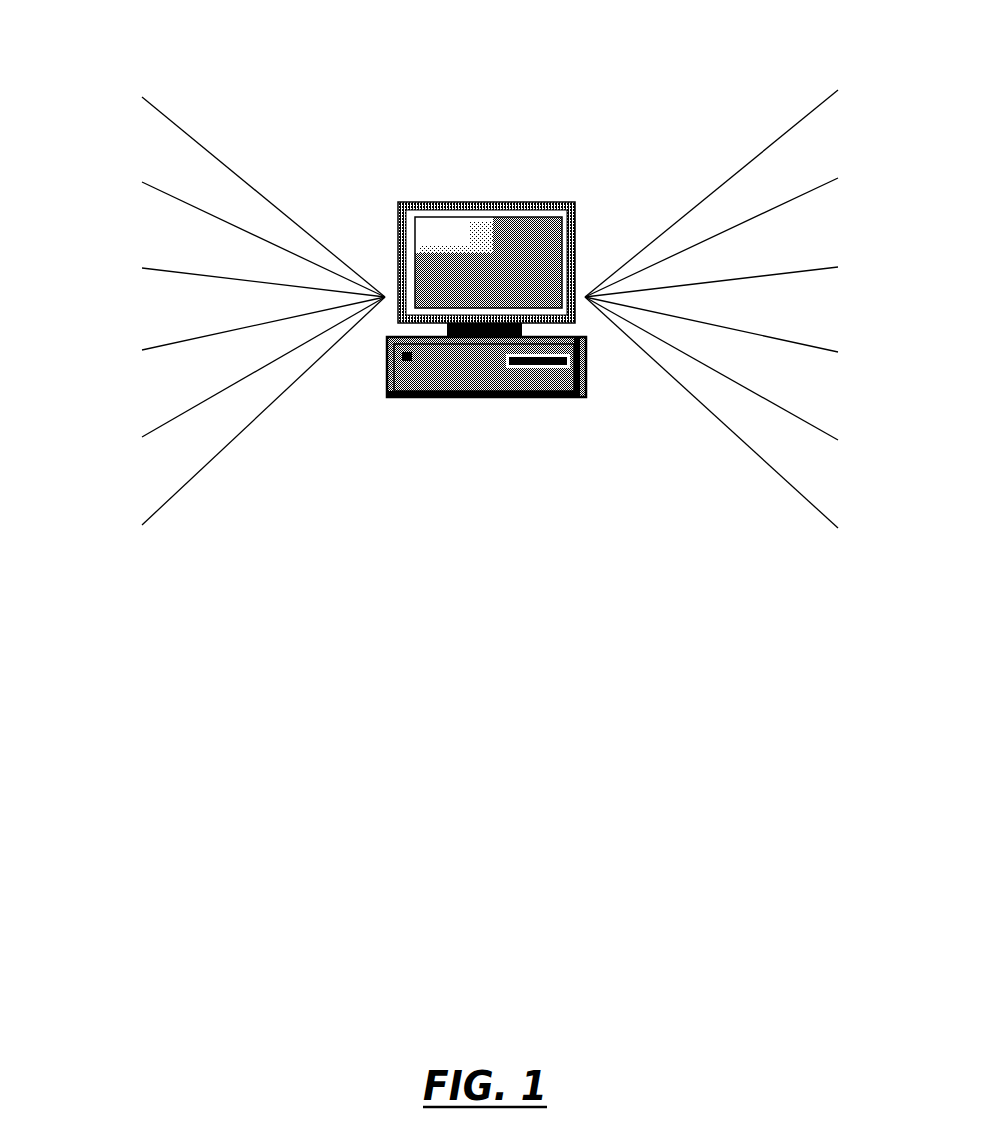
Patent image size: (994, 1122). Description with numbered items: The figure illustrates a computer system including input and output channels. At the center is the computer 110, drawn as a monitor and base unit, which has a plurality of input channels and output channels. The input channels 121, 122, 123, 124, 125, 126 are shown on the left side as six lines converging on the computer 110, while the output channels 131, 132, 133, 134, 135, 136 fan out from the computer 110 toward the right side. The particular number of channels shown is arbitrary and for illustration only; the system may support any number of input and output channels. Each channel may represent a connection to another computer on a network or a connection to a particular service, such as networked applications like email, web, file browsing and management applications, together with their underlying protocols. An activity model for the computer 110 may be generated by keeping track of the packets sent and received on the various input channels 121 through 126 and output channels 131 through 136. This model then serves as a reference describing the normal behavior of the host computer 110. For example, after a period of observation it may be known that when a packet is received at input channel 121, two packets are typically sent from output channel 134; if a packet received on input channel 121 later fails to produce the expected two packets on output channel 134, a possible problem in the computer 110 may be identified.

The computer 110 is at (486, 318).
The input channel 121 is at (142, 97).
The input channel 122 is at (142, 182).
The input channel 123 is at (142, 268).
The input channel 124 is at (142, 350).
The input channel 125 is at (142, 437).
The input channel 126 is at (142, 525).
The output channel 131 is at (832, 100).
The output channel 132 is at (830, 187).
The output channel 133 is at (828, 273).
The output channel 134 is at (826, 354).
The output channel 135 is at (826, 438).
The output channel 136 is at (827, 524).